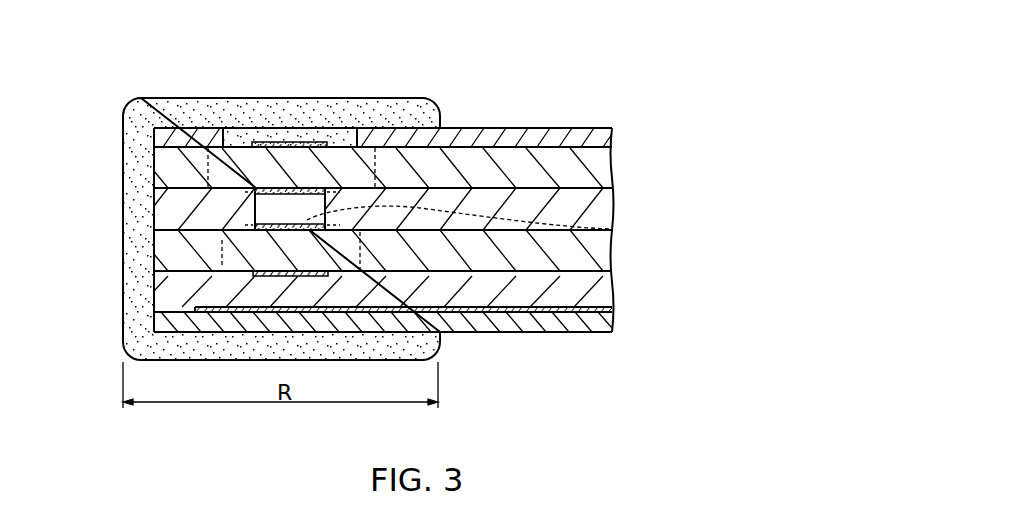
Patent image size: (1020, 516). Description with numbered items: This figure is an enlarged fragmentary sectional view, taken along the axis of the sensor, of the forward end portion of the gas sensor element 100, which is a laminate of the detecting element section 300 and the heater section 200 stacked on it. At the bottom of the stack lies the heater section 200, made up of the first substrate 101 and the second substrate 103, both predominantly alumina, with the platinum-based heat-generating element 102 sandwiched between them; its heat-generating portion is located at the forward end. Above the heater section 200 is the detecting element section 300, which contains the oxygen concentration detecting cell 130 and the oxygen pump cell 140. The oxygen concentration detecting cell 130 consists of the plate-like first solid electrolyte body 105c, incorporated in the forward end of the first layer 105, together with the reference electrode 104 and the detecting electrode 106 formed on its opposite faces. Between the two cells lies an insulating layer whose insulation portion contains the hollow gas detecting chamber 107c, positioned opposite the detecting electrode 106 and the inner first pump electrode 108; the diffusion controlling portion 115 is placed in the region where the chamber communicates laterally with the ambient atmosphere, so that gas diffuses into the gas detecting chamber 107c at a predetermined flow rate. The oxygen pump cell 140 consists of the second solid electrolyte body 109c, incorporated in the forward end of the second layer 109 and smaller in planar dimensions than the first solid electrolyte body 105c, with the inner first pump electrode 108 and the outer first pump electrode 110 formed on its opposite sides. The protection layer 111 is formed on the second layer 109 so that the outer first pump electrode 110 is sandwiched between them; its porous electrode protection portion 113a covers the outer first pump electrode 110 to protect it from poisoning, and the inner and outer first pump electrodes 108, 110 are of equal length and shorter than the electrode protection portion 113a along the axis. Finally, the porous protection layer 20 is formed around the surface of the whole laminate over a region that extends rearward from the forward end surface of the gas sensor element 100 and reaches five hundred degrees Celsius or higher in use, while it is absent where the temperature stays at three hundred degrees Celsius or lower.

The gas sensor element 100 is at (492, 86).
The porous protection layer 20 is at (190, 103).
The electrode protection portion 113a is at (307, 132).
The protection layer 111 is at (612, 131).
The outer first pump electrode 110 is at (323, 147).
The second layer 109 is at (600, 172).
The inner first pump electrode 108 is at (310, 187).
The oxygen pump cell 140 is at (688, 133).
The gas detecting chamber 107c is at (331, 215).
The diffusion controlling portion 115 is at (278, 208).
The detecting electrode 106 is at (312, 242).
The first layer 105 is at (605, 257).
The first solid electrolyte body 105c is at (234, 253).
The reference electrode 104 is at (330, 272).
The oxygen concentration detecting cell 130 is at (688, 220).
The second substrate 103 is at (603, 292).
The heat-generating element 102 is at (613, 313).
The first substrate 101 is at (595, 330).
The heater section 200 is at (688, 300).
The detecting element section 300 is at (736, 136).
The second solid electrolyte body 109c is at (226, 167).